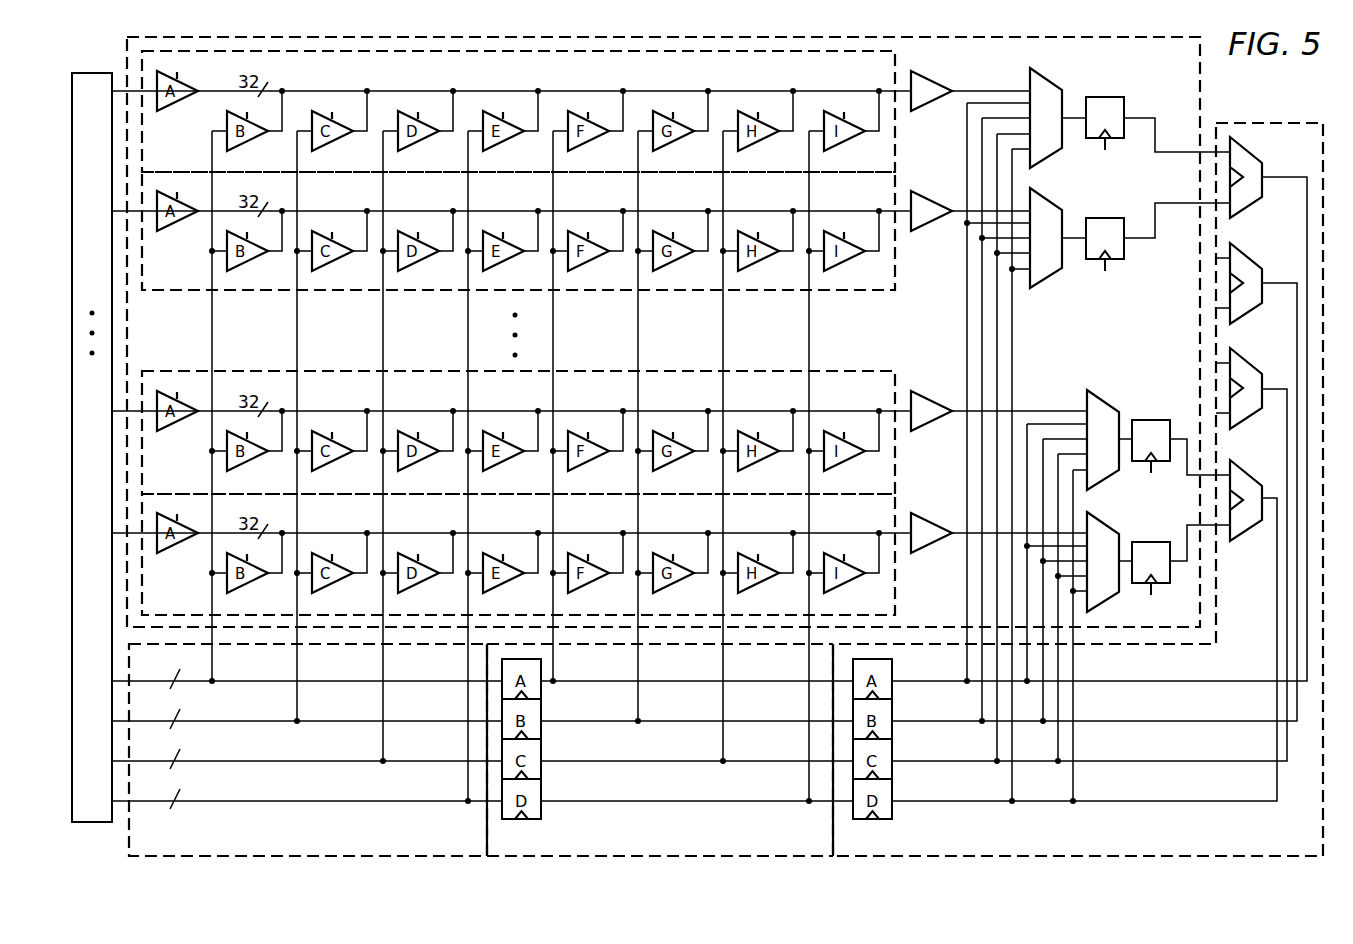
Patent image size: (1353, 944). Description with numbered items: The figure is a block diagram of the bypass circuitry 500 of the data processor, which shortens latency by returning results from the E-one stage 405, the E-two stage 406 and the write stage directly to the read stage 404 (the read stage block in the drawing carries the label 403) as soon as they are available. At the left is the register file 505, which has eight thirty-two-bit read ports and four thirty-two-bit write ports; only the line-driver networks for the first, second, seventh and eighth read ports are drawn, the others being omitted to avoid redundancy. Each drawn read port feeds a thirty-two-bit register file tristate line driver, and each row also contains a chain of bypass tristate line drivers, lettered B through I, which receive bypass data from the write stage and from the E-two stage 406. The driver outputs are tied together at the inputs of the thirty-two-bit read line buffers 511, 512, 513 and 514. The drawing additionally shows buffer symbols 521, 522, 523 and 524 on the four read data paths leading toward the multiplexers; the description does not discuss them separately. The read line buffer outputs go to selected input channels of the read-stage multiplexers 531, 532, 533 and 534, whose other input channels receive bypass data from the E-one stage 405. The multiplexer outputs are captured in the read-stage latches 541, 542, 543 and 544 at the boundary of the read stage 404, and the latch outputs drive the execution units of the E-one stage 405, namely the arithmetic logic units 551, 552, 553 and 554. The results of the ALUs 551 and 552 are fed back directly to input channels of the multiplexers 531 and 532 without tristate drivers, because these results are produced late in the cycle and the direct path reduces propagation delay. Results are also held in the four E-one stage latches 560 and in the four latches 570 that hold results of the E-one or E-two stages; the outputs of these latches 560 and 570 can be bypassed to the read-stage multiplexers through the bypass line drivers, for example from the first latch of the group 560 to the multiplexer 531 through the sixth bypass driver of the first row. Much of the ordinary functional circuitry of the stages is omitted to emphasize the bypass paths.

The bypass circuitry 500 is at (1283, 103).
The register file 505 is at (98, 822).
The read line buffer 511 is at (896, 54).
The read line buffer 512 is at (773, 291).
The read line buffer 513 is at (869, 372).
The read line buffer 514 is at (896, 496).
The read buffer 521 is at (930, 111).
The read buffer 522 is at (930, 231).
The read buffer 523 is at (933, 391).
The read buffer 524 is at (933, 553).
The read-stage multiplexer 531 is at (1040, 72).
The read-stage multiplexer 532 is at (1040, 192).
The read-stage multiplexer 533 is at (1085, 393).
The read-stage multiplexer 534 is at (1105, 518).
The read-stage latch 541 is at (1125, 104).
The read-stage latch 542 is at (1125, 256).
The read-stage latch 543 is at (1152, 420).
The read-stage latch 544 is at (1160, 542).
The arithmetic logic unit 551 is at (1262, 167).
The arithmetic logic unit 552 is at (1250, 252).
The arithmetic logic unit 553 is at (1250, 357).
The arithmetic logic unit 554 is at (1250, 469).
The latch 560 is at (893, 810).
The latch 570 is at (541, 810).
The read stage 403 is at (1125, 352).
The read stage 404 is at (1078, 489).
The E1 stage 405 is at (660, 750).
The E2 stage 406 is at (398, 842).